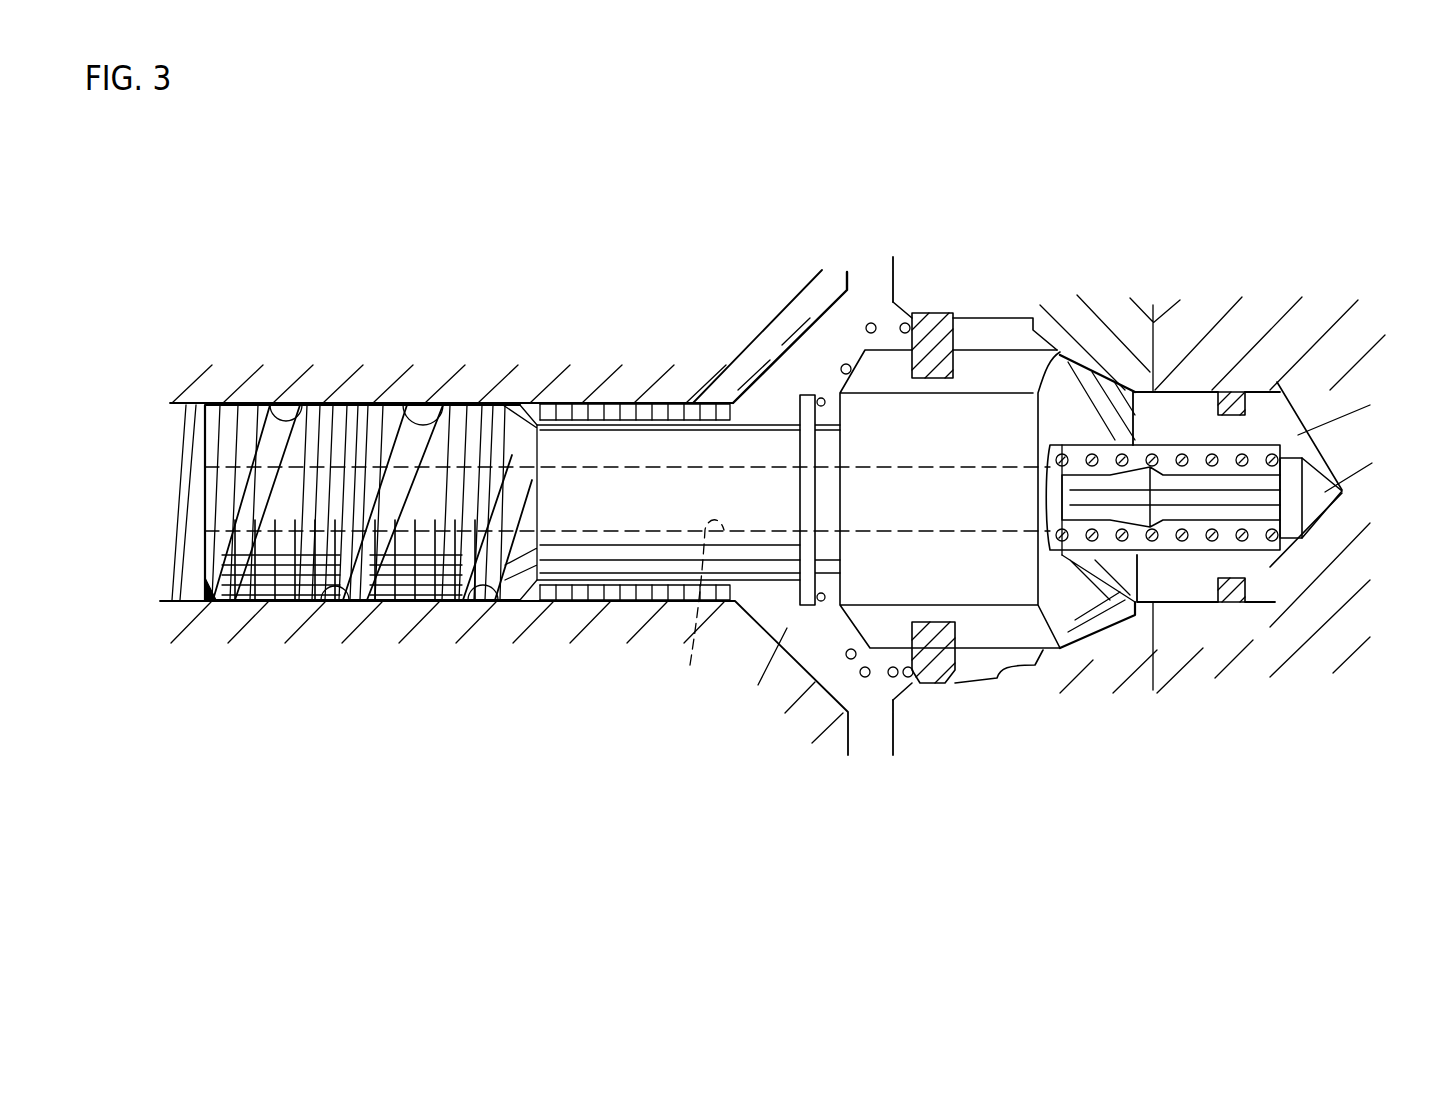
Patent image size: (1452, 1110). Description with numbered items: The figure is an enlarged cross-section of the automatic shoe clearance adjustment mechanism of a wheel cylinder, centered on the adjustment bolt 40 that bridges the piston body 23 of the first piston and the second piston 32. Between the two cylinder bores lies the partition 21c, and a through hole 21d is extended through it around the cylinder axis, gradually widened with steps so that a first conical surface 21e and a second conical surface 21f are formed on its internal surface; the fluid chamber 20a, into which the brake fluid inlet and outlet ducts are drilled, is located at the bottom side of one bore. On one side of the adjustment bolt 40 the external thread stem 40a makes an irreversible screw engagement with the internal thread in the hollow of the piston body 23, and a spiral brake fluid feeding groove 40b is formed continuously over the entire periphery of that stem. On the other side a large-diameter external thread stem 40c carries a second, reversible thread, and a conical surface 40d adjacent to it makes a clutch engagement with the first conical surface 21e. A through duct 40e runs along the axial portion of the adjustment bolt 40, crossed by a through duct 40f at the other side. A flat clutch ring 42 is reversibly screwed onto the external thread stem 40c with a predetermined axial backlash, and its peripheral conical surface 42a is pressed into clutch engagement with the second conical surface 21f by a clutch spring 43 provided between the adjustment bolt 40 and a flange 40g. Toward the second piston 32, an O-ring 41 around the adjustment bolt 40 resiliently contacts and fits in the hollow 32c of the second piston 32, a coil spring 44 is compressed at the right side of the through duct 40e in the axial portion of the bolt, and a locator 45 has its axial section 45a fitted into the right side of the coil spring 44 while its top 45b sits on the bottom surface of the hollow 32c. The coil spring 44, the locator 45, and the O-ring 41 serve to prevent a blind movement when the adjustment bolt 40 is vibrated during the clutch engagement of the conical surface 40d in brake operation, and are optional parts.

The fluid chamber 20a is at (766, 630).
The piston body 23 is at (360, 385).
The adjustment bolt 40 is at (675, 405).
The external thread stem 40a is at (443, 603).
The spiral brake fluid feeding groove 40b is at (373, 600).
The external thread stem 40c is at (993, 357).
The conical surface 40d is at (1125, 613).
The through duct 40e is at (695, 614).
The through duct 40f is at (1173, 613).
The flange 40g is at (800, 395).
The partition 21c is at (1103, 330).
The through hole 21d is at (1000, 690).
The first conical surface 21e is at (1065, 655).
The second conical surface 21f is at (900, 697).
The second piston 32 is at (1290, 318).
The hollow 32c is at (1296, 442).
The O-ring 41 is at (1235, 605).
The flat clutch ring 42 is at (925, 313).
The conical surface 42a is at (945, 690).
The clutch spring 43 is at (870, 322).
The coil spring 44 is at (1272, 452).
The locator 45 is at (1272, 592).
The axial section 45a is at (1292, 540).
The top 45b is at (1344, 492).